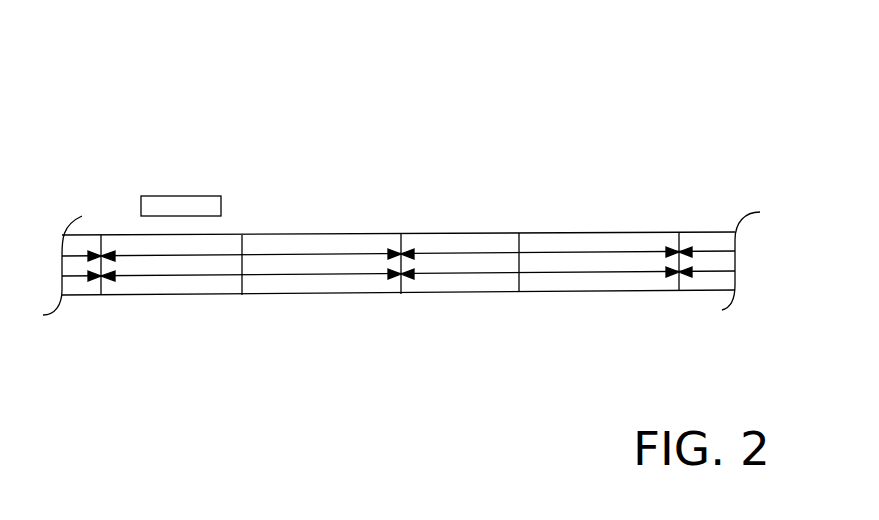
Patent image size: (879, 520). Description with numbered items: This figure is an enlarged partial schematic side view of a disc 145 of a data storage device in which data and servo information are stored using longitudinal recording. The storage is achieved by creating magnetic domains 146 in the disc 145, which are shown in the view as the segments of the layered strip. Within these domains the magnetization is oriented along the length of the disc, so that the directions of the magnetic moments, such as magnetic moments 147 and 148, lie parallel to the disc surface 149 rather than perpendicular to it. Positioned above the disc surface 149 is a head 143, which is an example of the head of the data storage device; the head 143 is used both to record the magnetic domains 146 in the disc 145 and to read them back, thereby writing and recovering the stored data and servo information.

The head 143 is at (183, 196).
The disc 145 is at (498, 113).
The magnetic domains 146 is at (203, 294).
The magnetic moment 147 is at (457, 254).
The magnetic moment 148 is at (300, 255).
The disc surface 149 is at (622, 230).